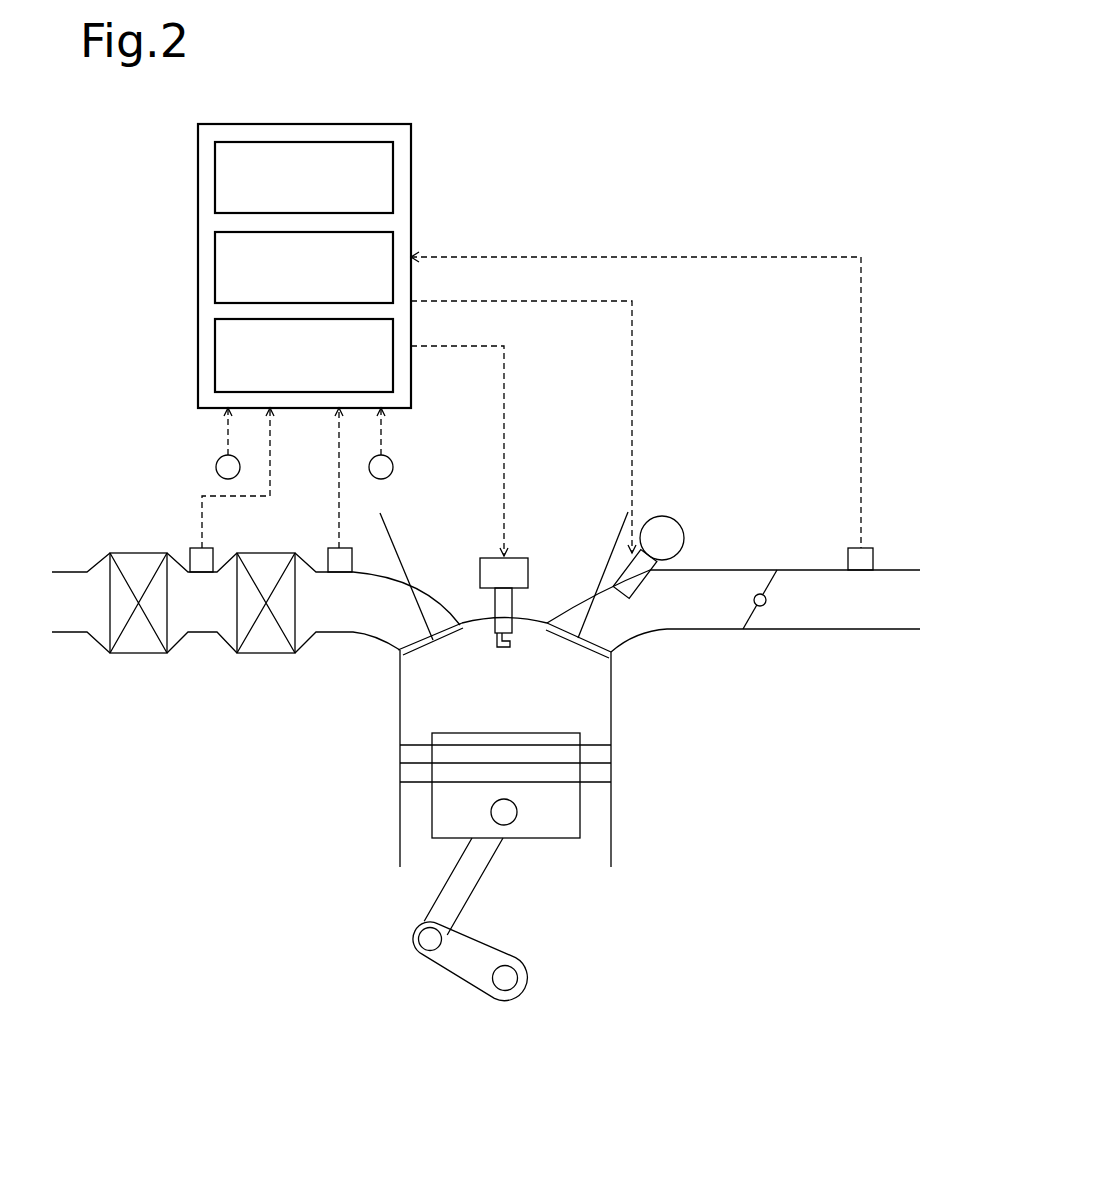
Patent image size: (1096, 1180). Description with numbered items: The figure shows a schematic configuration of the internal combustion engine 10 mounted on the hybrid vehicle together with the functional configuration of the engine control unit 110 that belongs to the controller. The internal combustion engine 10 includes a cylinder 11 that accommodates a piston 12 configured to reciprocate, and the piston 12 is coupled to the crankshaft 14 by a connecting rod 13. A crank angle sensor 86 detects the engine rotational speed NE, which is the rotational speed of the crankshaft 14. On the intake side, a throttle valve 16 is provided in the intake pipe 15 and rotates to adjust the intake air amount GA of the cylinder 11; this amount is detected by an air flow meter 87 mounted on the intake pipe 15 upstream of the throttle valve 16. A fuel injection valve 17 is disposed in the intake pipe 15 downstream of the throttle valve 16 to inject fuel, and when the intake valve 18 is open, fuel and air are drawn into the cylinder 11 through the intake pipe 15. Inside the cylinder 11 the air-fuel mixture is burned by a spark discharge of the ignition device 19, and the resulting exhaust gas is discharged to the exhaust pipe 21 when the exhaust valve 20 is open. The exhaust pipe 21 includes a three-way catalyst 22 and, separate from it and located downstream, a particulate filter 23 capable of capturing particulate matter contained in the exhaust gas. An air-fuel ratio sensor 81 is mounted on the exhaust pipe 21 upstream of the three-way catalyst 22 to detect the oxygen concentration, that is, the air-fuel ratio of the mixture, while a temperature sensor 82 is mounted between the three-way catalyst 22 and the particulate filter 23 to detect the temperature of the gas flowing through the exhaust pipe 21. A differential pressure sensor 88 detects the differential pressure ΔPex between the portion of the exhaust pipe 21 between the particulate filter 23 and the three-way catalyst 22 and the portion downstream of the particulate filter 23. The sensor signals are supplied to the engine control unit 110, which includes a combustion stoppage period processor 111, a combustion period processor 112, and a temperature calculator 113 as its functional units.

The internal combustion engine 10 is at (209, 860).
The cylinder 11 is at (612, 795).
The piston 12 is at (580, 823).
The connecting rod 13 is at (477, 882).
The crankshaft 14 is at (528, 983).
The intake pipe 15 is at (730, 630).
The throttle valve 16 is at (777, 583).
The fuel injection valve 17 is at (637, 591).
The intake valve 18 is at (593, 650).
The ignition device 19 is at (539, 548).
The exhaust valve 20 is at (420, 650).
The exhaust pipe 21 is at (332, 634).
The three-way catalyst 22 is at (267, 654).
The particulate filter 23 is at (138, 654).
The air-fuel ratio sensor 81 is at (328, 551).
The temperature sensor 82 is at (190, 550).
The crank angle sensor 86 is at (393, 467).
The air flow meter 87 is at (848, 550).
The differential pressure sensor 88 is at (216, 467).
The engine control unit 110 is at (338, 124).
The combustion stoppage period processor 111 is at (215, 177).
The combustion period processor 112 is at (215, 266).
The temperature calculator 113 is at (215, 355).